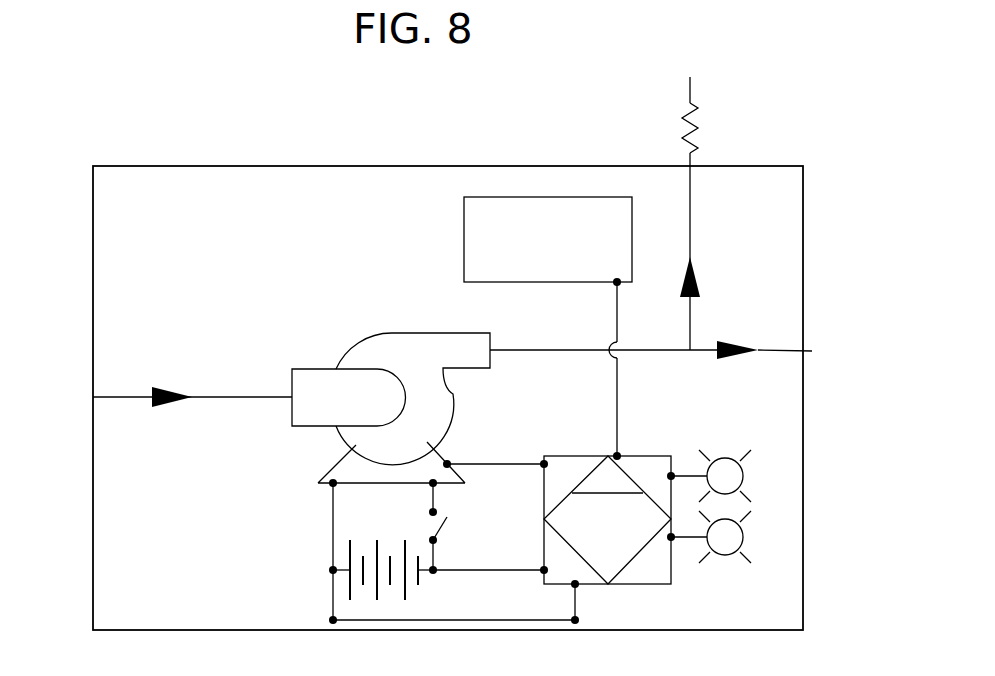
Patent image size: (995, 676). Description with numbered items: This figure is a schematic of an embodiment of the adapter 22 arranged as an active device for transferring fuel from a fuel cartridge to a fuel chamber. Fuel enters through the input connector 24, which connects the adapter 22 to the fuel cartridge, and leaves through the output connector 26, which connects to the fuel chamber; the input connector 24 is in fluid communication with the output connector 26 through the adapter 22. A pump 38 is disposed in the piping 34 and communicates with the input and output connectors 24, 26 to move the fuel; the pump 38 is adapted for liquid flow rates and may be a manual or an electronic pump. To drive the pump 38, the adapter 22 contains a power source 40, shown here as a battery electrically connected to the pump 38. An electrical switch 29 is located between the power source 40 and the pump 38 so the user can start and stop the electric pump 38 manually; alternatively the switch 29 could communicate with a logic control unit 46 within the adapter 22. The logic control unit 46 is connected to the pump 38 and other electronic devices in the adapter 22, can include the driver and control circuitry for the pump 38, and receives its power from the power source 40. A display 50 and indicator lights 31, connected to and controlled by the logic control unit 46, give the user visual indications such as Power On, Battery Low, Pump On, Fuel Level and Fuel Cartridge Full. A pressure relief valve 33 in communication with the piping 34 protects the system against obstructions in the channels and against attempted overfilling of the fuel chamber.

The adapter 22 is at (222, 110).
The input connector 24 is at (93, 397).
The output connector 26 is at (812, 351).
The electrical switch 29 is at (447, 518).
The indicator lights 31 is at (743, 476).
The pressure relief valve 33 is at (699, 107).
The piping 34 is at (237, 397).
The pump 38 is at (411, 331).
The power source 40 is at (350, 548).
The logic control unit 46 is at (655, 456).
The display 50 is at (464, 216).